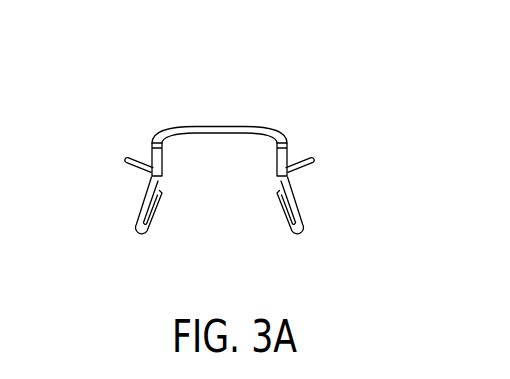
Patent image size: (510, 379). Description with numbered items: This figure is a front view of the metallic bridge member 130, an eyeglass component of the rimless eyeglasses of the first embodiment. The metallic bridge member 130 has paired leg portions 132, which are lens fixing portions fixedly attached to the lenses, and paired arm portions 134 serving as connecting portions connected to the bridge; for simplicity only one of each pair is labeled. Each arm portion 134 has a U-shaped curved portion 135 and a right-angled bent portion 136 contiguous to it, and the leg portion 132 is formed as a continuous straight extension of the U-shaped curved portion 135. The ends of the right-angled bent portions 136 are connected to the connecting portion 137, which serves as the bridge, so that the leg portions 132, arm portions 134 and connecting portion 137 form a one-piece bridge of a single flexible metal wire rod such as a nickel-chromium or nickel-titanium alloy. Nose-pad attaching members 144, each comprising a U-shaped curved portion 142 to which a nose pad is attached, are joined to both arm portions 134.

The metallic bridge member 130 is at (225, 177).
The leg portion 132 is at (313, 156).
The arm portion 134 is at (268, 180).
The U-shaped curved portion 135 is at (306, 150).
The right-angled bent portion 136 is at (162, 176).
The connecting portion 137 is at (218, 126).
The U-shaped curved portion 142 is at (140, 233).
The nose-pad attaching member 144 is at (133, 203).